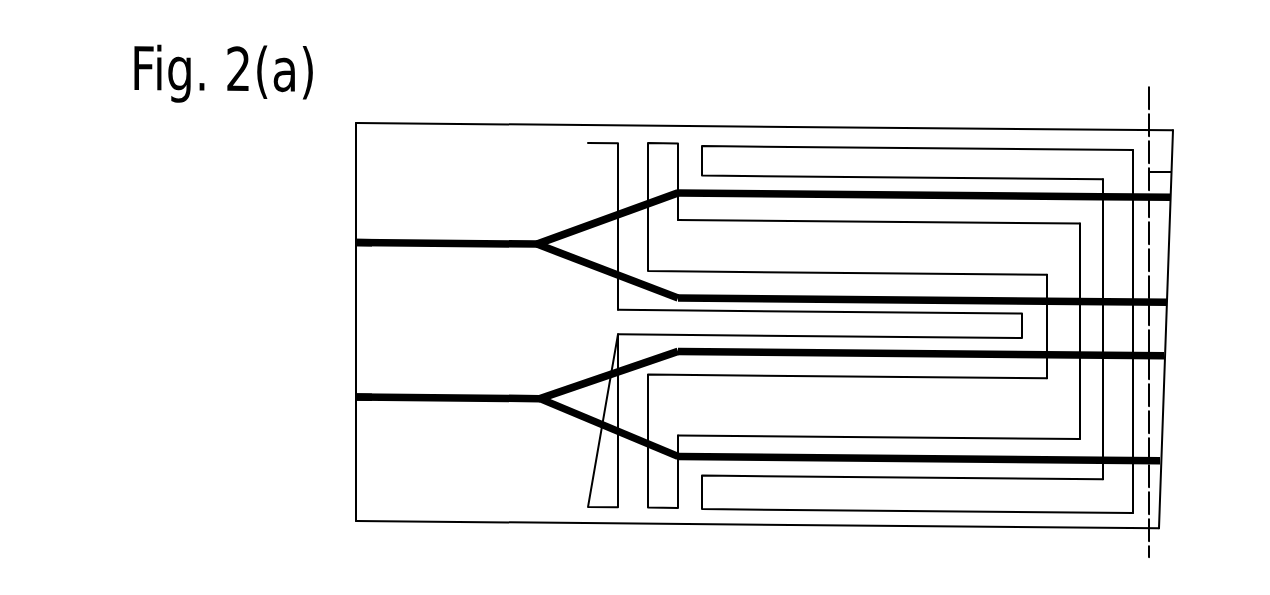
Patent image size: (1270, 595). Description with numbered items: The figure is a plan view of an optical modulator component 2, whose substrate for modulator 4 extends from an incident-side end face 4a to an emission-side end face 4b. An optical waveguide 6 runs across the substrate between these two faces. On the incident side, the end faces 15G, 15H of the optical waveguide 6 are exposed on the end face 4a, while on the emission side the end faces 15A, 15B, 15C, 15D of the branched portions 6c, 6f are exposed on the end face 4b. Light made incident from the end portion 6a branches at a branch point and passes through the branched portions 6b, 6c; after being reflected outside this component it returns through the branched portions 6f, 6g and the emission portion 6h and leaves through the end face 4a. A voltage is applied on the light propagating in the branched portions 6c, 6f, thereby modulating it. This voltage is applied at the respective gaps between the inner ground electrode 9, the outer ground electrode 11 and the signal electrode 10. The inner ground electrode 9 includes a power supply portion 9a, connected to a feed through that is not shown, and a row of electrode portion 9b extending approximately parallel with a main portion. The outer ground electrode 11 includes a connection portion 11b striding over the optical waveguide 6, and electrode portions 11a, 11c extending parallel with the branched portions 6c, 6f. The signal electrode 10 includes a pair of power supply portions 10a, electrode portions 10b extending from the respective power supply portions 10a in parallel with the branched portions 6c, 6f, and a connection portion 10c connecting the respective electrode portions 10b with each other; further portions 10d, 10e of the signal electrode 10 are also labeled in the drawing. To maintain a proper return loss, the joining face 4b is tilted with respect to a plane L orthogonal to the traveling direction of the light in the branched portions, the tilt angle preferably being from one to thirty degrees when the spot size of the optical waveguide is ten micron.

The optical modulator component 2 is at (1167, 115).
The substrate for modulator 4 is at (767, 292).
The end face 4a is at (355, 193).
The end face 4b is at (1175, 146).
The optical waveguide 6 is at (764, 326).
The end portion 6a is at (448, 237).
The branched portion 6b is at (633, 196).
The branched portion 6c is at (912, 183).
The branched portion 6f is at (947, 457).
The branched portion 6g is at (585, 421).
The emission portion 6h is at (422, 404).
The inner ground electrode 9 is at (765, 321).
The power supply portion 9a is at (588, 308).
The electrode portion 9b is at (808, 326).
The signal electrode 10 is at (948, 321).
The power supply portion 10a is at (662, 139).
The electrode portion 10b is at (848, 224).
The connection portion 10c is at (1097, 315).
The second electrode lower arm 10d is at (1037, 462).
The second electrode lower tab 10e is at (667, 494).
The outer ground electrode 11 is at (983, 325).
The electrode portion 11a is at (1008, 156).
The connection portion 11b is at (1127, 228).
The electrode portion 11c is at (886, 495).
The end face 15A is at (1173, 186).
The end face 15B is at (1167, 296).
The end face 15C is at (1163, 351).
The end face 15D is at (1157, 455).
The end face 15G is at (355, 243).
The end face 15H is at (355, 402).
The plane L is at (1148, 106).